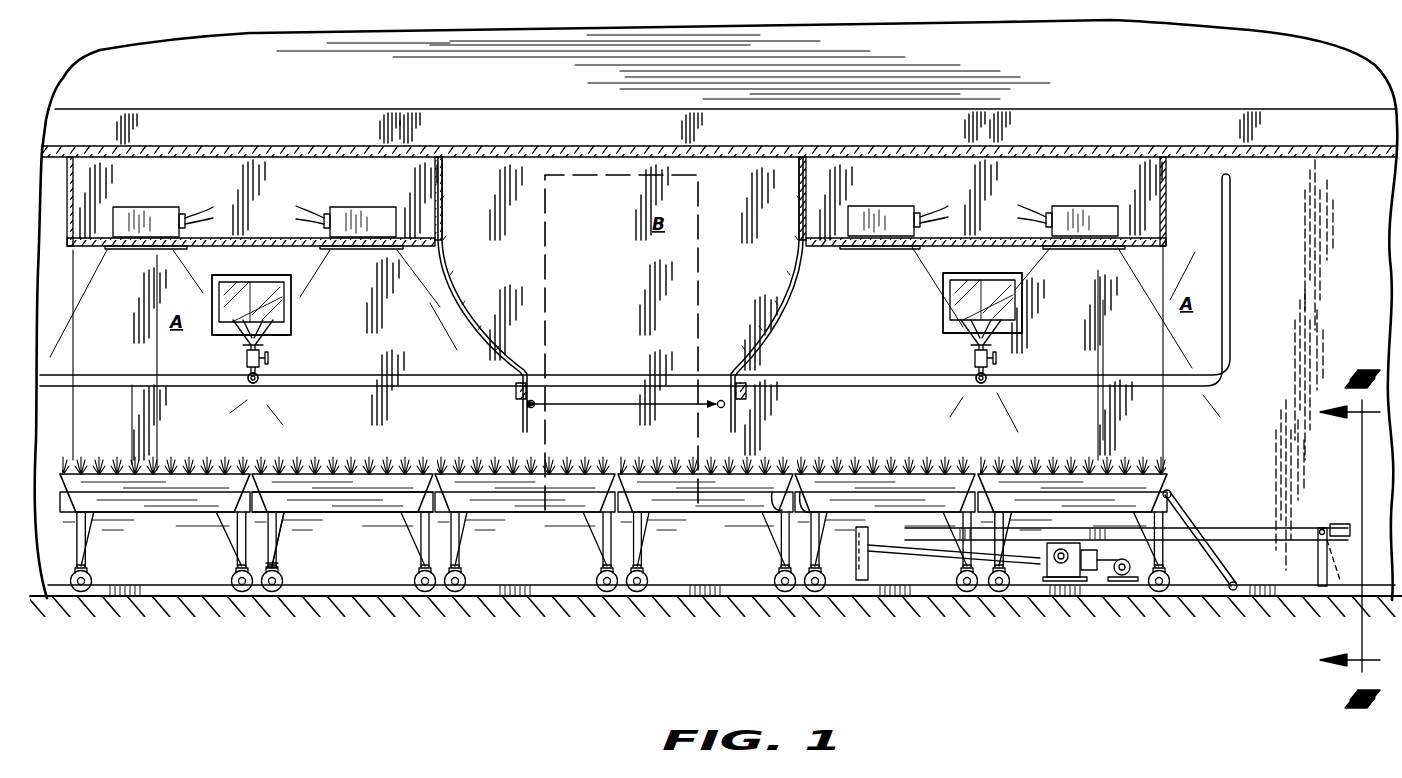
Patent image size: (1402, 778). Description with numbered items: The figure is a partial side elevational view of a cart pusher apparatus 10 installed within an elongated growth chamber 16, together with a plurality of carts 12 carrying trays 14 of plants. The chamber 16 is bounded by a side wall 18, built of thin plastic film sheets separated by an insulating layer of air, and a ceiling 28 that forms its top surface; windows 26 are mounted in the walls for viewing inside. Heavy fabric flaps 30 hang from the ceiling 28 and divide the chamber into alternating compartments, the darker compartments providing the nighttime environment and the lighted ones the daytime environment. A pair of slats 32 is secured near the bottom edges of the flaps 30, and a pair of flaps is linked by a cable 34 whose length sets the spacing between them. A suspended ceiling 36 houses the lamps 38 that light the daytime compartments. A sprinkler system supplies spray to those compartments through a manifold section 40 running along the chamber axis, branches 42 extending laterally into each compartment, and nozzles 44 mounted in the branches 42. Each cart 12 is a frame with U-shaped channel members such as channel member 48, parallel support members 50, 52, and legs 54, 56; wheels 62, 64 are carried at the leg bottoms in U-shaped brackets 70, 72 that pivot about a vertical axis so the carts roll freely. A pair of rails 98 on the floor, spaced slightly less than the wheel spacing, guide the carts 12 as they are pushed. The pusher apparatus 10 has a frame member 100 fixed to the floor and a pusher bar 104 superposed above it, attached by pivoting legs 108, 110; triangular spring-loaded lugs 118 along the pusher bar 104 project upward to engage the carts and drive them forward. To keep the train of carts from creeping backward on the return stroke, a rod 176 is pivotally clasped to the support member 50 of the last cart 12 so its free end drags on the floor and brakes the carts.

The cart pusher apparatus 10 is at (1086, 556).
The cart 12 is at (1086, 490).
The tray 14 is at (1033, 470).
The growth chamber 16 is at (1329, 183).
The side wall 18 is at (1283, 284).
The window 26 is at (1024, 307).
The ceiling 28 is at (1282, 143).
The flap 30 is at (465, 298).
The slat 32 is at (517, 393).
The cable 34 is at (606, 408).
The suspended ceiling 36 is at (262, 240).
The lamp 38 is at (152, 215).
The manifold section 40 is at (915, 373).
The branch 42 is at (248, 385).
The nozzle 44 is at (246, 358).
The U-shaped channel member 48 is at (613, 498).
The support member 50 is at (778, 504).
The support member 52 is at (812, 512).
The leg 54 is at (408, 528).
The leg 56 is at (285, 550).
The wheel 62 is at (450, 593).
The wheel 64 is at (280, 592).
The U-shaped bracket 70 is at (414, 592).
The U-shaped bracket 72 is at (268, 590).
The rail 98 is at (1298, 590).
The frame member 100 is at (1192, 570).
The pusher bar 104 is at (1320, 528).
The leg 108 is at (1330, 565).
The leg 110 is at (855, 572).
The spring-loaded lug 118 is at (1190, 522).
The rod 176 is at (1219, 556).